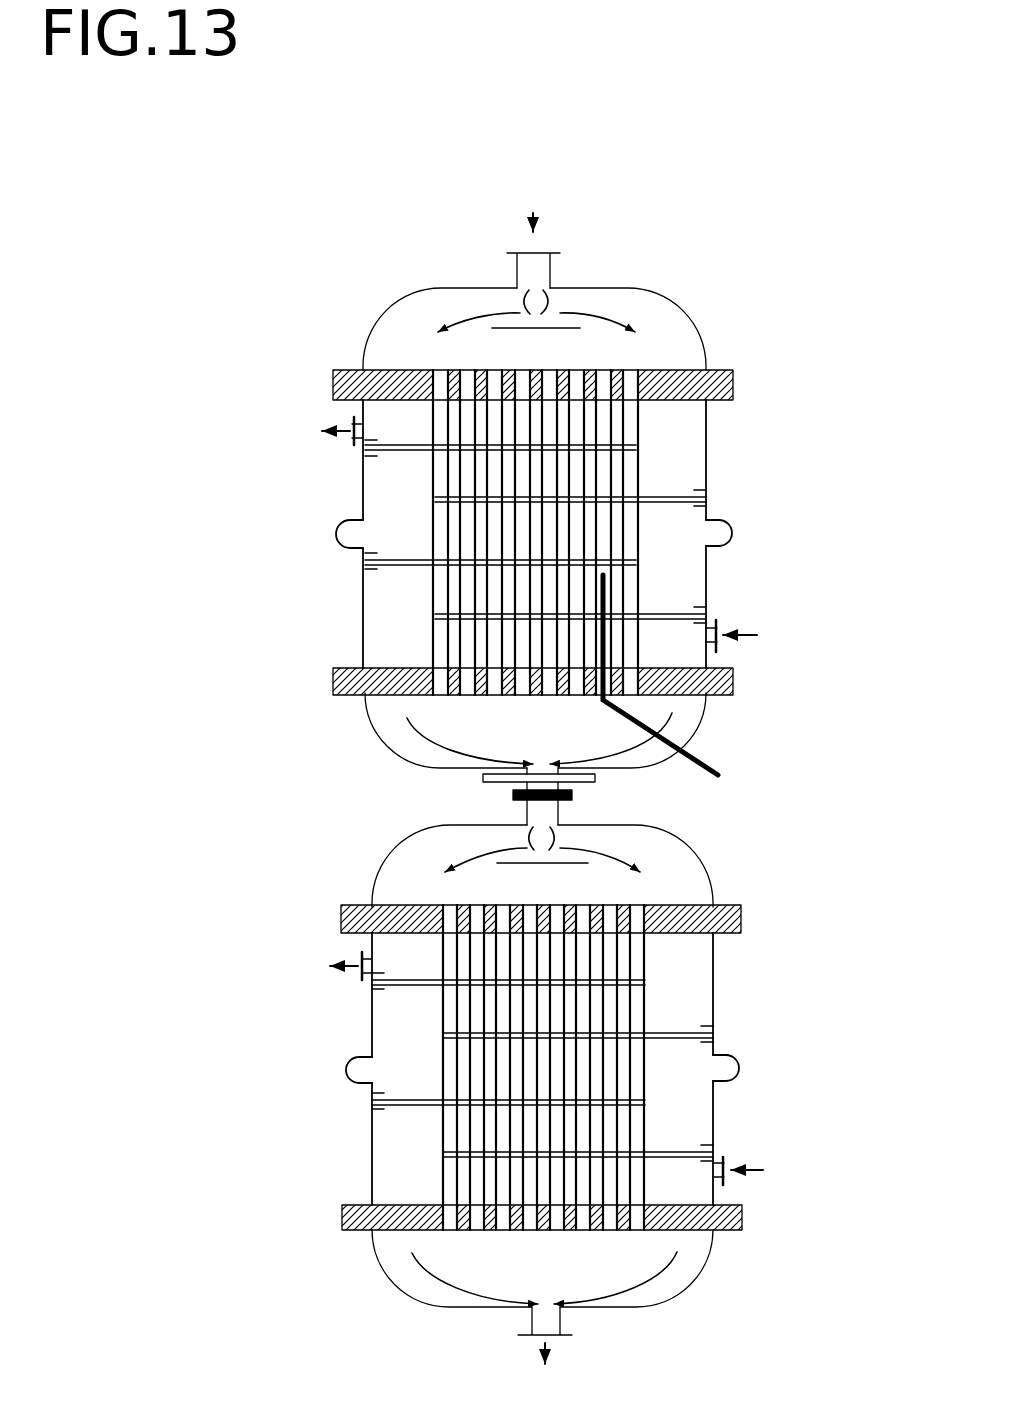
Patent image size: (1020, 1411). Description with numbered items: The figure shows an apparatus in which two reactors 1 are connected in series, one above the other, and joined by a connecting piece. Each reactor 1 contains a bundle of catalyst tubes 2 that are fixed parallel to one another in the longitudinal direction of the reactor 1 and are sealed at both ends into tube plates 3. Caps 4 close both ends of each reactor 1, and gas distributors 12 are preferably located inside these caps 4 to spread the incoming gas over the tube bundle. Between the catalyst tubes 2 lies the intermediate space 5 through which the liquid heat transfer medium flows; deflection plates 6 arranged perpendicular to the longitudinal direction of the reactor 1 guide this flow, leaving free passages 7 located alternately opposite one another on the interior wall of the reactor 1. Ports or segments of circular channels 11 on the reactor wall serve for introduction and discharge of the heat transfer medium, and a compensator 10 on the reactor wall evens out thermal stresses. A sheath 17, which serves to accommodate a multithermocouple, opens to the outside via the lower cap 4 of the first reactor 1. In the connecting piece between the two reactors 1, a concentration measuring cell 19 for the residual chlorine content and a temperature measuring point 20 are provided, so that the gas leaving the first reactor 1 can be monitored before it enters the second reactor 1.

The reactor 1 is at (422, 266).
The catalyst tubes 2 is at (612, 366).
The tube plates 3 is at (718, 366).
The caps 4 is at (403, 346).
The intermediate space 5 is at (455, 656).
The deflection plates 6 is at (636, 468).
The free passages 7 is at (388, 482).
The compensator 10 is at (735, 527).
The ports or segments of circular channels 11 is at (358, 420).
The gas distributors 12 is at (577, 328).
The sheath 17 is at (718, 772).
The concentration measuring cell 19 is at (470, 776).
The temperature measuring point 20 is at (600, 782).